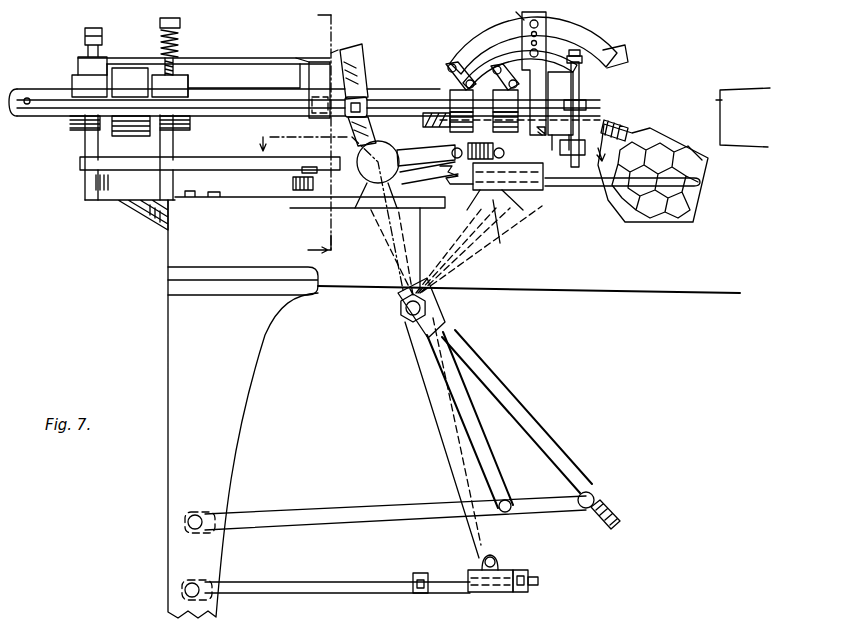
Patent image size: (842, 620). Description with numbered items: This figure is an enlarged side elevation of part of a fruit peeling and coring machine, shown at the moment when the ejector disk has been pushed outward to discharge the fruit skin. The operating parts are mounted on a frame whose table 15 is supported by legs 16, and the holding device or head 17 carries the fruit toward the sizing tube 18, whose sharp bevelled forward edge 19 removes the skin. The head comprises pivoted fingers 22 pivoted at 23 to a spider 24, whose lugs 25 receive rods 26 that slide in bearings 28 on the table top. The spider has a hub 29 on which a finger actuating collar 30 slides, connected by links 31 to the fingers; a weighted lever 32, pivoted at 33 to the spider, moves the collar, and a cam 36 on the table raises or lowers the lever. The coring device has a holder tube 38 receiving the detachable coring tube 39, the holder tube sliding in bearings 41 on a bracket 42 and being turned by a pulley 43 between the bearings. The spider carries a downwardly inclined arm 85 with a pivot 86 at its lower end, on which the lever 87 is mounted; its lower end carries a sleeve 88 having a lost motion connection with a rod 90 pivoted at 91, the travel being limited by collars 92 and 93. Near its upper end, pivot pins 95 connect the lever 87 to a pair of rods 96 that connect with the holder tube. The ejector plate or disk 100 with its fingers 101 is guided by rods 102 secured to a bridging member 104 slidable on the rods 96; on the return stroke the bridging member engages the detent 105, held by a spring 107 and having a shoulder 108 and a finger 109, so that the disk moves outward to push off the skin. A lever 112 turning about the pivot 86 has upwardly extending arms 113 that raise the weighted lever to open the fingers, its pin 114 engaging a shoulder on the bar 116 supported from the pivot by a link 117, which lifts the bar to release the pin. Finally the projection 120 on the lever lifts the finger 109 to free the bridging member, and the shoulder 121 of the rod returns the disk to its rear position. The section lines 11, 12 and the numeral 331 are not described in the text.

The section line 11 is at (311, 129).
The section line 12 is at (428, 208).
The platform or table 15 is at (454, 267).
The legs 16 is at (243, 409).
The holding device or head 17 is at (539, 45).
The sizing tube or horn 18 is at (745, 117).
The bevelled forward edge 19 is at (718, 101).
The pivoted fingers 22 is at (522, 18).
The pivot 23 is at (546, 14).
The spider 24 is at (560, 111).
The apertured sleeves or lugs 25 is at (545, 180).
The rods 26 is at (597, 195).
The bearings 28 is at (295, 185).
The tubular part or hub 29 is at (481, 90).
The finger actuating collar 30 is at (484, 101).
The links 31 is at (513, 56).
The weighted lever 32 is at (407, 150).
The pivot 33 is at (452, 154).
The cam 36 is at (350, 181).
The holder tube 38 is at (203, 80).
The coring tube 39 is at (410, 100).
The bearings 41 is at (130, 86).
The bracket 42 is at (135, 208).
The pulley 43 is at (130, 82).
The downwardly inclined arm 85 is at (520, 212).
The pivot 86 is at (400, 318).
The lever 87 is at (430, 410).
The sleeve 88 is at (478, 592).
The rod or bar 90 is at (348, 593).
The pivot 91 is at (200, 586).
The collar 92 is at (418, 572).
The collar 93 is at (528, 572).
The pivot pins 95 is at (366, 95).
The rods 96 is at (43, 95).
The ejector plate or disk 100 is at (581, 95).
The fingers 101 is at (583, 62).
The rods 102 is at (586, 105).
The bridging or connecting member 104 is at (313, 60).
The detent or stop member 105 is at (228, 57).
The spring 107 is at (182, 42).
The shoulder 108 is at (310, 62).
The finger or projection 109 is at (331, 53).
The lever 112 is at (478, 424).
The upwardly extending arms 113 is at (425, 180).
The pin or rod 114 is at (511, 510).
The rod or bar 116 is at (368, 510).
The link 117 is at (538, 443).
The projection 120 is at (356, 52).
The shoulder 121 is at (322, 118).
The rod 331 is at (512, 228).